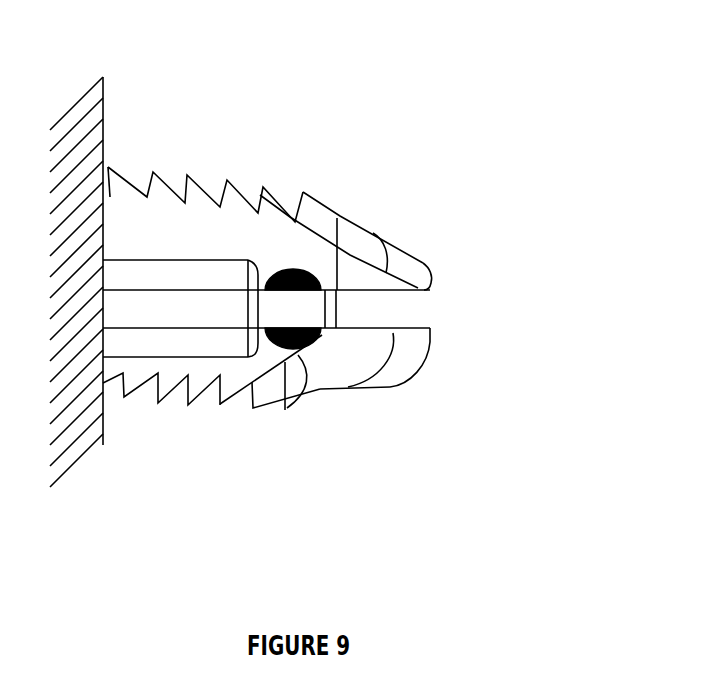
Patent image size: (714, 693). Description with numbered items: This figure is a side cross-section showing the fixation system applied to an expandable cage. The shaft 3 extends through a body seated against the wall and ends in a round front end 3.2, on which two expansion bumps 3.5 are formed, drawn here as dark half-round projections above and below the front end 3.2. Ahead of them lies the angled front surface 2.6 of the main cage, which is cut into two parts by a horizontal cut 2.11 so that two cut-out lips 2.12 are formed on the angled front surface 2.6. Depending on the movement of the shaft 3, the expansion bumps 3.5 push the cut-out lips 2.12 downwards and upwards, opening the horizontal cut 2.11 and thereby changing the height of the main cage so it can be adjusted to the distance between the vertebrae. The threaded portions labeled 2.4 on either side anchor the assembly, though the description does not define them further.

The thread 2.4 is at (152, 173).
The shaft 3 is at (187, 272).
The expansion bumps 3.5 is at (297, 273).
The angled front surface 2.6 is at (383, 238).
The cut-out lips 2.12 is at (420, 267).
The horizontal cut 2.11 is at (388, 307).
The round front end 3.2 is at (315, 316).